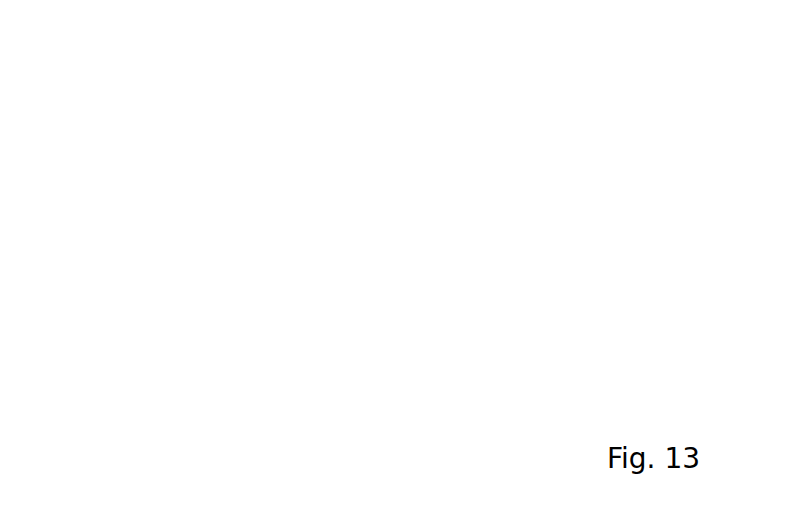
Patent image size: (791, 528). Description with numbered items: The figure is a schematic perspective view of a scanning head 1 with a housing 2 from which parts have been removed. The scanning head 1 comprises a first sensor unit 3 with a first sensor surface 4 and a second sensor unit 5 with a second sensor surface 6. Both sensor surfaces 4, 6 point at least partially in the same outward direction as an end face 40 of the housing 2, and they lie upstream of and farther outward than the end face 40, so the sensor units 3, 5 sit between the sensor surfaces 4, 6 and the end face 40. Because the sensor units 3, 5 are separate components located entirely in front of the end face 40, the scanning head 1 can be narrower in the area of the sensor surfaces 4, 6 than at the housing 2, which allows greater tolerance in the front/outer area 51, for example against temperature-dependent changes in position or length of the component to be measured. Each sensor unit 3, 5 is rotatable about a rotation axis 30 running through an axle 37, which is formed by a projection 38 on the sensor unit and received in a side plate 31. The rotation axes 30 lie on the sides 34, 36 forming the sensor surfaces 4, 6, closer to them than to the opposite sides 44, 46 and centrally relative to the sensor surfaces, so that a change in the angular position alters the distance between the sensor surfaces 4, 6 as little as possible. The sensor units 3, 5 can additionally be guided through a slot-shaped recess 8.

The scanning head 1 is at (83, 98).
The housing 2 is at (688, 215).
The first sensor unit 3 is at (206, 148).
The first sensor surface 4 is at (247, 118).
The second sensor unit 5 is at (624, 121).
The second sensor surface 6 is at (561, 92).
The slot-shaped recess 8 is at (237, 163).
The rotation axis 30 is at (309, 150).
The side plate 31 is at (402, 175).
The side of first sensor unit forming the sensor surface 34 is at (286, 110).
The side of second sensor unit forming the sensor surface 36 is at (553, 86).
The axle 37 is at (302, 143).
The projection 38 is at (305, 148).
The end face 40 is at (187, 238).
The side of first sensor unit opposite the sensor surface 44 is at (207, 187).
The side of second sensor unit opposite the sensor surface 46 is at (611, 138).
The front/outer area 51 is at (107, 162).